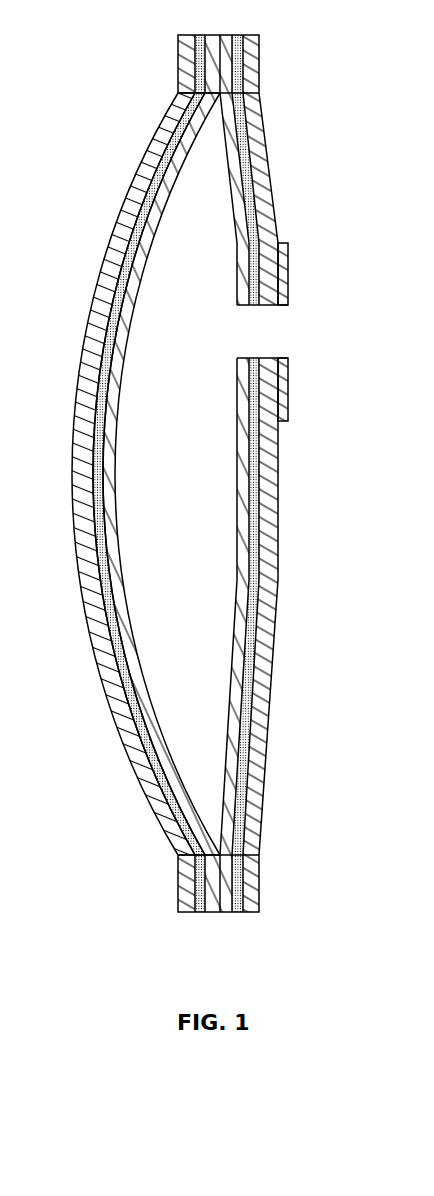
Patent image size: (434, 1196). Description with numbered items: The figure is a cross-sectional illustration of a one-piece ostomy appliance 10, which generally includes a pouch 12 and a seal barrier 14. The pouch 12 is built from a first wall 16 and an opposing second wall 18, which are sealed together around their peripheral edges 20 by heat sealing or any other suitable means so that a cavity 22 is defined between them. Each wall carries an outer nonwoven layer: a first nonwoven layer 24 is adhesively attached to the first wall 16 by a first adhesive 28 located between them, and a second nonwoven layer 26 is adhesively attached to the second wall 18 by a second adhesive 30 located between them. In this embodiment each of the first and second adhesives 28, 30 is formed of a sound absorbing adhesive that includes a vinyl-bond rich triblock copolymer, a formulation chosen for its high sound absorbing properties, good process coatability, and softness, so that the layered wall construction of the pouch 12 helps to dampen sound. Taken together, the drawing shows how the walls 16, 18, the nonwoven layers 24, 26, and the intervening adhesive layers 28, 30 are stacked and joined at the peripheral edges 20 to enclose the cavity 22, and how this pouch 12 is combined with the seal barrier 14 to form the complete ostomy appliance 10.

The ostomy appliance 10 is at (313, 48).
The pouch 12 is at (258, 161).
The seal barrier 14 is at (288, 268).
The first wall 16 is at (235, 133).
The second wall 18 is at (155, 210).
The peripheral edges 20 is at (220, 912).
The cavity 22 is at (152, 621).
The first nonwoven layer 24 is at (266, 196).
The second nonwoven layer 26 is at (85, 388).
The first adhesive 28 is at (270, 542).
The second adhesive 30 is at (95, 472).